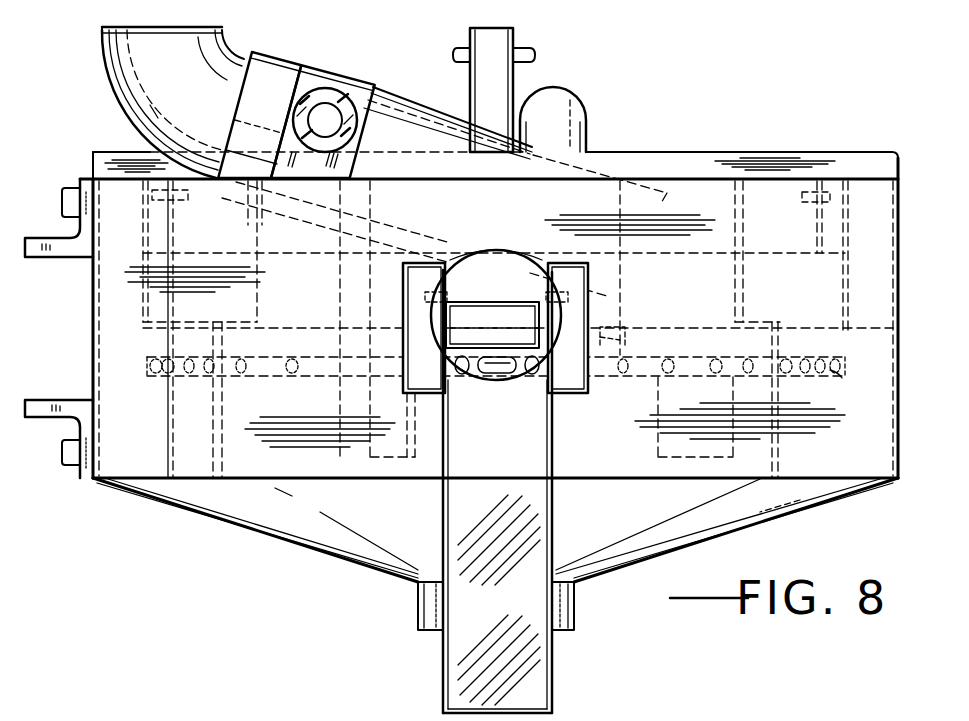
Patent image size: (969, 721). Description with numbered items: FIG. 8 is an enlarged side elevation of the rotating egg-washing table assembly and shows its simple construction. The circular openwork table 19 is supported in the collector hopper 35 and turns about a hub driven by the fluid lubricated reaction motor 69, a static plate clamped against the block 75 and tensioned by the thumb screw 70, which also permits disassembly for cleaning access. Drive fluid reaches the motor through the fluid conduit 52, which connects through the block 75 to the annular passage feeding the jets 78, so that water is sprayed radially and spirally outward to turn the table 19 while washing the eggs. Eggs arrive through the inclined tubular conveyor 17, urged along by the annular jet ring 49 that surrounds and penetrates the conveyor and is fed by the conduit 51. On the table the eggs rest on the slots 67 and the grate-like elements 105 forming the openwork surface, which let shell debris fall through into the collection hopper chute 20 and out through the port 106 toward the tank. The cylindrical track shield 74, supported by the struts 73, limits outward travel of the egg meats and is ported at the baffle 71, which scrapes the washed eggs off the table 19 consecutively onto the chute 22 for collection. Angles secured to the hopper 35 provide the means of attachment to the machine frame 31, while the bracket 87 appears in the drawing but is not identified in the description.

The tubular conveyor 17 is at (148, 118).
The jet ring 49 is at (276, 60).
The conduit 51 is at (344, 80).
The thumb screw 70 is at (495, 33).
The fluid conduit 52 is at (568, 108).
The cylindrical track shield 74 is at (850, 236).
The machine frame 31 is at (76, 250).
The mounting bracket 87 is at (60, 412).
The block 75 is at (370, 287).
The baffle 71 is at (482, 312).
The reaction motor 69 is at (606, 328).
The struts 73 is at (736, 288).
The jets 78 is at (628, 338).
The slots 67 is at (795, 360).
The collector hopper 35 is at (898, 352).
The grate-like elements 105 is at (845, 388).
The table 19 is at (612, 374).
The collection hopper chute 20 is at (782, 528).
The port 106 is at (420, 606).
The chute 22 is at (550, 673).